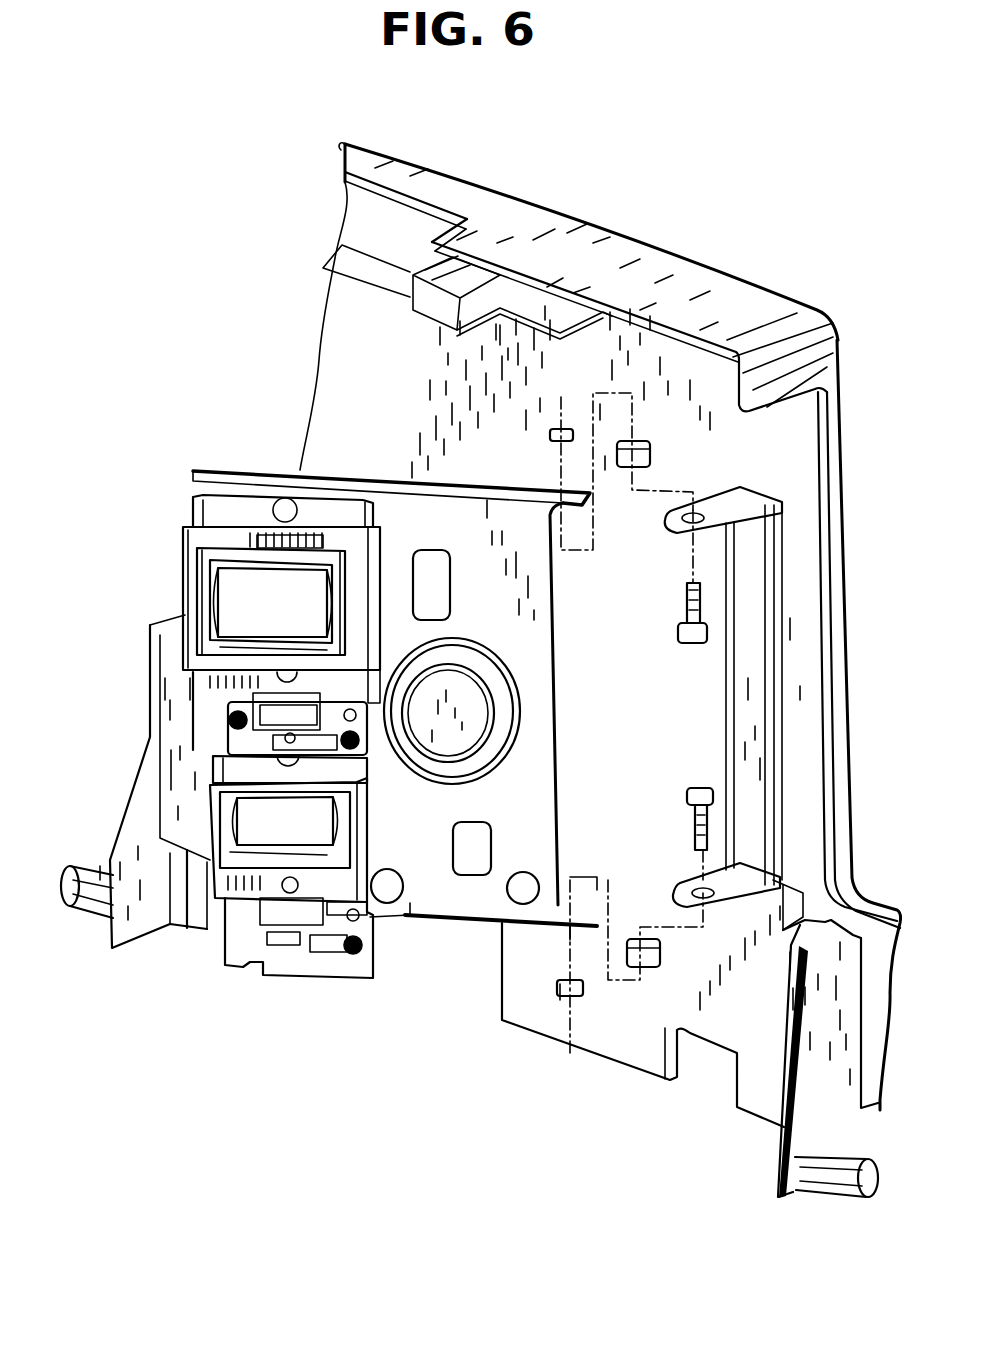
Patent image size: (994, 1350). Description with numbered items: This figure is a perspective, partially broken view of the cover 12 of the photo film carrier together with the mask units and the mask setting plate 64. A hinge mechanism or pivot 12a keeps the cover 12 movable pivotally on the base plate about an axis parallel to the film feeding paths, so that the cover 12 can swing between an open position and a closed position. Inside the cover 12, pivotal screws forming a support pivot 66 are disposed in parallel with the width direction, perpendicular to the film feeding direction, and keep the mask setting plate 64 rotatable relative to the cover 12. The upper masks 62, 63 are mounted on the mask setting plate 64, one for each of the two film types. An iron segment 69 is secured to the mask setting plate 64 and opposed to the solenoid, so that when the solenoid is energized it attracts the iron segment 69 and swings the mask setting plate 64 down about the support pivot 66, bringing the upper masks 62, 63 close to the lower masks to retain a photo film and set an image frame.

The cover 12 is at (672, 245).
The hinge mechanism or pivot 12a is at (92, 867).
The upper mask 62 is at (353, 567).
The upper mask 63 is at (333, 822).
The mask setting plate 64 is at (376, 456).
The pivotal screws or support pivot 66 is at (686, 605).
The iron segment 69 is at (443, 690).